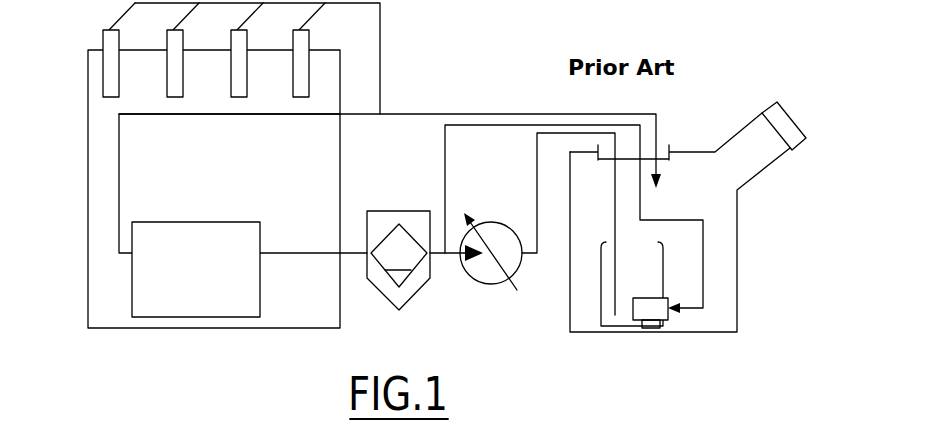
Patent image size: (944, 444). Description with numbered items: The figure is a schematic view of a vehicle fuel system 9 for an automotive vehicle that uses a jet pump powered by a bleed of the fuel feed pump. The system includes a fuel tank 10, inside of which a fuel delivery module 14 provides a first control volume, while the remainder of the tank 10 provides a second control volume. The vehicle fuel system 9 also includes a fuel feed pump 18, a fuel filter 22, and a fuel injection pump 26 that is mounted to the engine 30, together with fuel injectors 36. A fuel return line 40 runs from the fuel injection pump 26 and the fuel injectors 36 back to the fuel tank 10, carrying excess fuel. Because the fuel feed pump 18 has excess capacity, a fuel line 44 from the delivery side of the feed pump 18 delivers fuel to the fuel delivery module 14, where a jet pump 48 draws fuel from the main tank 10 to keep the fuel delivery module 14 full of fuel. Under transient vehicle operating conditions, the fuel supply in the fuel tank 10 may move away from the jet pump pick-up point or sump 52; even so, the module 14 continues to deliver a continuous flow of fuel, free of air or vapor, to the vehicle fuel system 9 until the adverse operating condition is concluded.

The vehicle fuel system 9 is at (494, 34).
The fuel tank 10 is at (738, 255).
The fuel delivery module 14 is at (601, 303).
The fuel feed pump 18 is at (490, 287).
The fuel filter 22 is at (381, 293).
The fuel injection pump 26 is at (232, 222).
The engine 30 is at (88, 180).
The fuel injectors 36 is at (310, 62).
The fuel return line 40 is at (437, 112).
The fuel line 44 is at (447, 172).
The jet pump 48 is at (642, 307).
The sump 52 is at (656, 334).